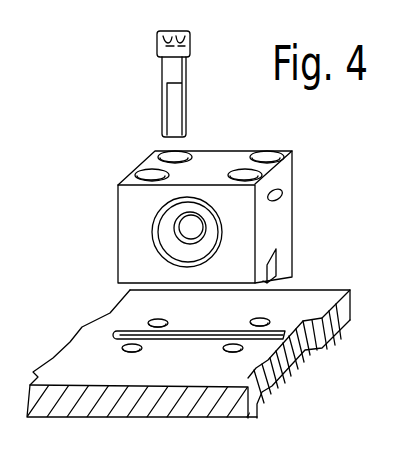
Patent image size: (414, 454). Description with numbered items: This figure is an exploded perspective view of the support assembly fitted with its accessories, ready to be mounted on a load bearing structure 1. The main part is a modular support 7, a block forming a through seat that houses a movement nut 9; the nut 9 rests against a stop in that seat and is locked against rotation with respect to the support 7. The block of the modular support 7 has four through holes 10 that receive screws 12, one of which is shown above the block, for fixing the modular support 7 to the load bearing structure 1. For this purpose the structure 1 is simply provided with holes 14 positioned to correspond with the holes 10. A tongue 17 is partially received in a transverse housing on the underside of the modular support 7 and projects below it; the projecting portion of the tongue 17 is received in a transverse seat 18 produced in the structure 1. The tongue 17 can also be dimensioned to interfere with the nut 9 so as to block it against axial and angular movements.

The load bearing structure 1 is at (296, 286).
The modular support 7 is at (280, 208).
The movement nut 9 is at (177, 232).
The through holes 10 is at (273, 160).
The screws 12 is at (174, 99).
The holes 14 is at (257, 320).
The tongue 17 is at (278, 267).
The transverse seat 18 is at (137, 335).